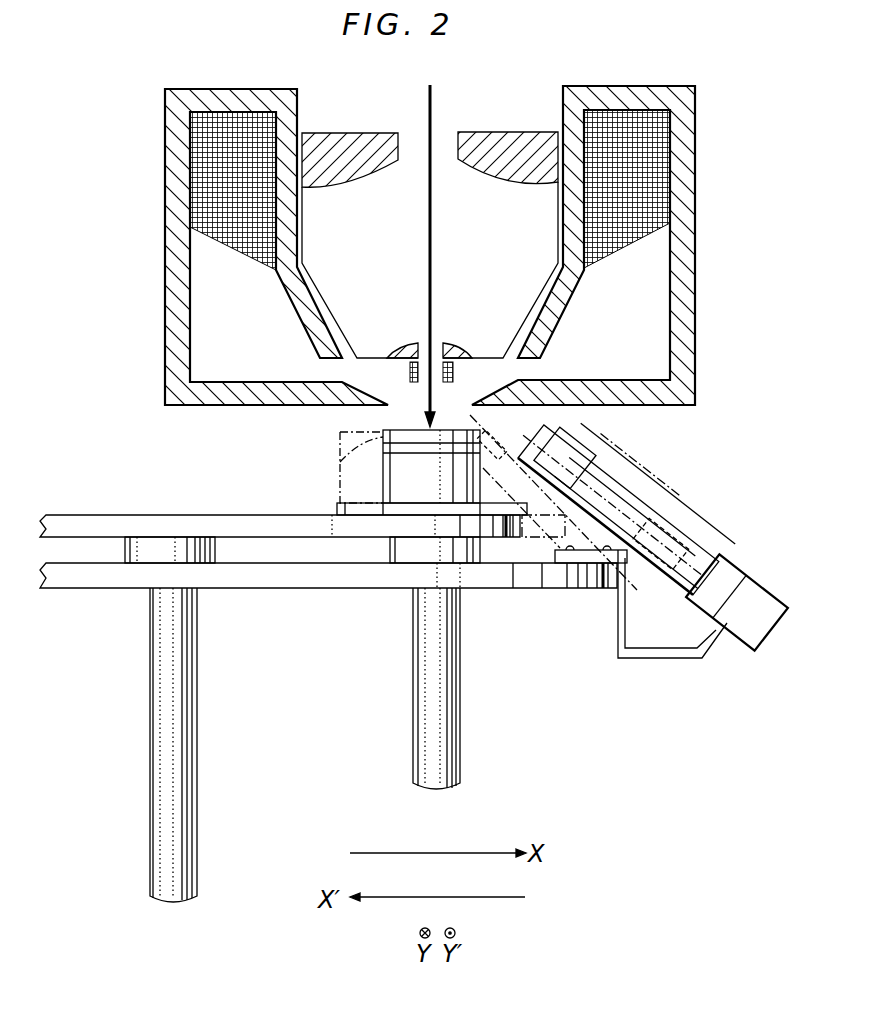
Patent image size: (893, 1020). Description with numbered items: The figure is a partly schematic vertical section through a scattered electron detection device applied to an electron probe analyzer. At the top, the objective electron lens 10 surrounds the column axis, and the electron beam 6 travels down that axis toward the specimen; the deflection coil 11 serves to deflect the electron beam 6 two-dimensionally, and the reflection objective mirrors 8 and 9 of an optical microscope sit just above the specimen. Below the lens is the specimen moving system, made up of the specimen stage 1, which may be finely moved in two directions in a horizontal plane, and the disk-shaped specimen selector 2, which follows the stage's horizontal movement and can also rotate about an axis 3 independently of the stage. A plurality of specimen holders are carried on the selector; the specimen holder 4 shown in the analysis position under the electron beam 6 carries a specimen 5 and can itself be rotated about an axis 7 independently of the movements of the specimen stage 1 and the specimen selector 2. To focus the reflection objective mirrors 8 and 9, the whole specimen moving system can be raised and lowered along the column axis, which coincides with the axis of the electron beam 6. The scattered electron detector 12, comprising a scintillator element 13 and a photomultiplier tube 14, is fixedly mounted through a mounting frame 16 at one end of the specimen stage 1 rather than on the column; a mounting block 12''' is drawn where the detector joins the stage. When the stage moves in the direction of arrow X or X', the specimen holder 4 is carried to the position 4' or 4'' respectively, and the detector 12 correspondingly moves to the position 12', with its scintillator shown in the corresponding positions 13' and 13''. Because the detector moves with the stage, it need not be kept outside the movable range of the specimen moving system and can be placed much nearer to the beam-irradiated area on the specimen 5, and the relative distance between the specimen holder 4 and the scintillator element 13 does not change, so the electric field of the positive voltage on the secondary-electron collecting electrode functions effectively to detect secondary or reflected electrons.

The specimen stage 1 is at (529, 573).
The disk-shaped specimen selector 2 is at (249, 520).
The axis 3 is at (197, 684).
The specimen holder 4 is at (432, 528).
The position of specimen holder 4' is at (553, 495).
The position of specimen holder 4'' is at (338, 467).
The specimen 5 is at (341, 488).
The electron beam 6 is at (432, 117).
The axis 7 is at (458, 683).
The reflection objective mirror 8 is at (347, 170).
The reflection objective mirror 9 is at (463, 356).
The objective electron lens 10 is at (166, 278).
The deflection coil 11 is at (410, 380).
The scattered electron detector 12 is at (653, 538).
The position of scattered electron detector 12' is at (672, 483).
The ion gun mounting block 12''' is at (591, 586).
The scintillator element 13 is at (576, 446).
The ion source in swung position 13' is at (645, 497).
The ion source in second position 13'' is at (472, 423).
The photomultiplier tube 14 is at (628, 487).
The mounting frame 16 is at (660, 656).